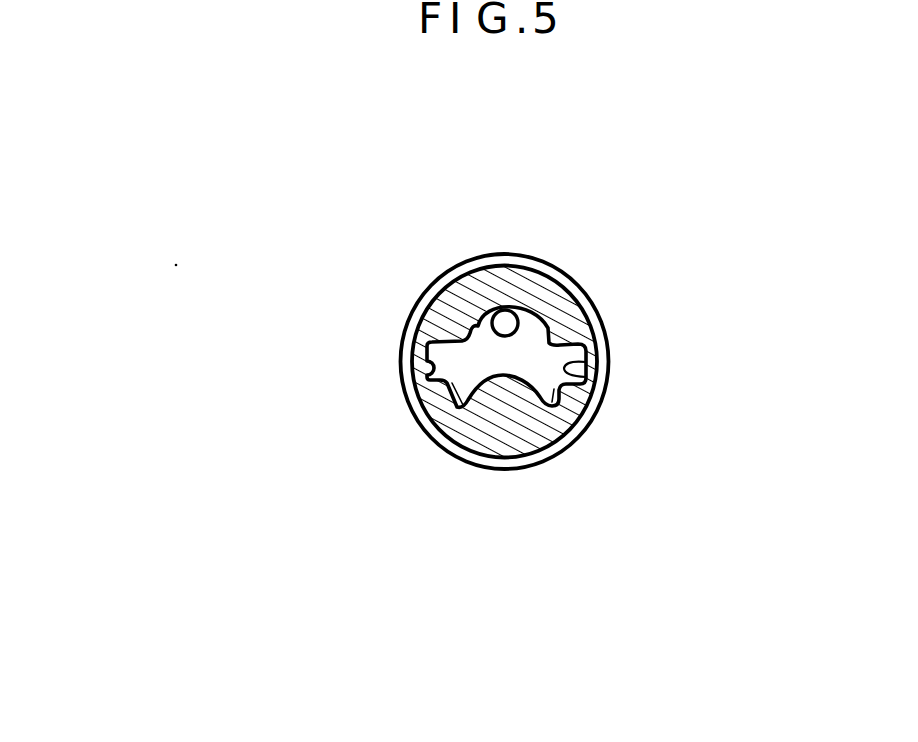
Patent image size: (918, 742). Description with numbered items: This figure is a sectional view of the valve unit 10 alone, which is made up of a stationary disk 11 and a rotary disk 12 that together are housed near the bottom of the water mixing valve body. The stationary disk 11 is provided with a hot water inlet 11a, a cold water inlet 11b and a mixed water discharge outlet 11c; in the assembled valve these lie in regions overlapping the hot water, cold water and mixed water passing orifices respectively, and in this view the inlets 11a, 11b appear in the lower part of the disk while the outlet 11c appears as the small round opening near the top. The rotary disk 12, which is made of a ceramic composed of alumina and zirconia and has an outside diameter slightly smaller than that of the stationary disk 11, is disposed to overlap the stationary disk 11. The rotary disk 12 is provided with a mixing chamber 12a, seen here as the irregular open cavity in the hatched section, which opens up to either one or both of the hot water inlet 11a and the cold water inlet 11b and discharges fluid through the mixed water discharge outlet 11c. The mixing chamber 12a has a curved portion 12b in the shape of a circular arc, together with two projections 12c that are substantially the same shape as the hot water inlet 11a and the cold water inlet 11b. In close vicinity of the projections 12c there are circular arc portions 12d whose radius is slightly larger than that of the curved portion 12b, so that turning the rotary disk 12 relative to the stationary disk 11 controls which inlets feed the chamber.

The valve unit 10 is at (436, 243).
The stationary disk 11 is at (563, 447).
The hot water inlet 11a is at (455, 410).
The cold water inlet 11b is at (557, 409).
The mixed water discharge outlet 11c is at (504, 322).
The rotary disk 12 is at (482, 435).
The mixing chamber 12a is at (508, 360).
The curved portion 12b is at (425, 303).
The projection 12c is at (433, 347).
The circular arc portion 12d is at (563, 366).